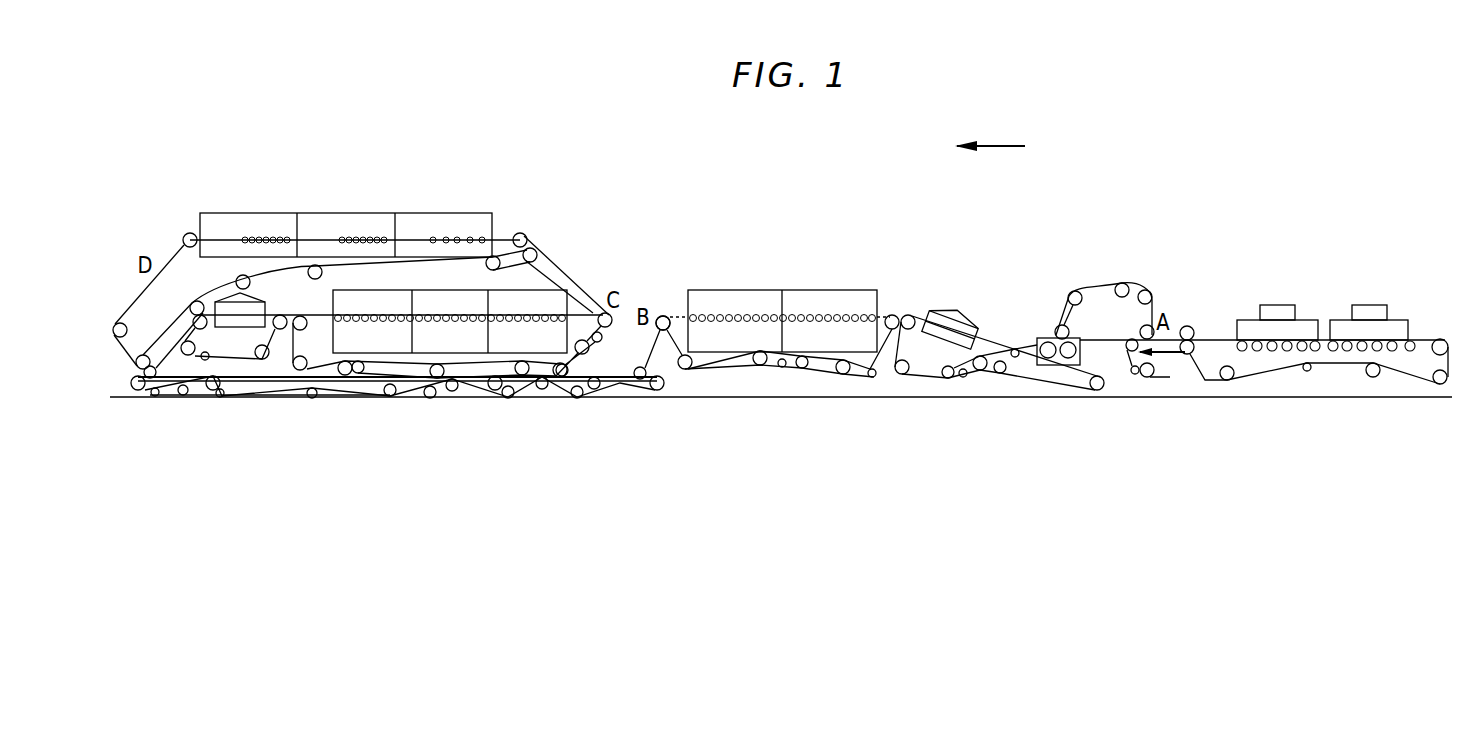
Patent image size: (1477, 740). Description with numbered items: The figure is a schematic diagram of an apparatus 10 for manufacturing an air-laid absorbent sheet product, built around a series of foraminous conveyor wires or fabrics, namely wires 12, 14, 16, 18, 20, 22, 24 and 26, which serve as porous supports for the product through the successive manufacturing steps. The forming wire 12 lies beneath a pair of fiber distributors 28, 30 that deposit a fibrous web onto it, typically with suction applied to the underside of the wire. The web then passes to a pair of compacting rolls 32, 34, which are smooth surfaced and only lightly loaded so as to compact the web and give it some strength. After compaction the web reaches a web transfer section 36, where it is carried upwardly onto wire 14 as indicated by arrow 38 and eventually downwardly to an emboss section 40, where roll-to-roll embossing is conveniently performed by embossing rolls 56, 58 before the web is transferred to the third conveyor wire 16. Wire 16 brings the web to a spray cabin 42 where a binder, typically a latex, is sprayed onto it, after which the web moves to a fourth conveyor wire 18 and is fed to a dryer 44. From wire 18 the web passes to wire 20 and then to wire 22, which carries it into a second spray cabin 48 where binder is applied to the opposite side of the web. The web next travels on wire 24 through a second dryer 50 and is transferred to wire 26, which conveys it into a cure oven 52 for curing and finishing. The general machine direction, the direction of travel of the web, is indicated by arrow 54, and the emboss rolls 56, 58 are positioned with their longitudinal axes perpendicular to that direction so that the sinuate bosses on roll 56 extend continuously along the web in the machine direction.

The apparatus 10 is at (774, 205).
The forming wire 12 is at (1418, 336).
The conveyor wire 14 is at (1147, 311).
The third conveyor wire 16 is at (990, 340).
The fourth conveyor wire 18 is at (678, 314).
The conveyor wire 20 is at (610, 377).
The conveyor wire 22 is at (278, 316).
The conveyor wire 24 is at (278, 343).
The conveyor wire 26 is at (555, 278).
The fiber distributor 28 is at (1262, 311).
The fiber distributor 30 is at (1366, 305).
The compacting roll 32 is at (1188, 325).
The compacting roll 34 is at (1188, 358).
The web transfer section 36 is at (1093, 289).
The arrow 38 is at (1164, 364).
The emboss section 40 is at (1053, 352).
The spray cabin 42 is at (946, 307).
The dryer 44 is at (822, 290).
The spray cabin 48 is at (228, 312).
The dryer 50 is at (360, 345).
The cure oven 52 is at (385, 213).
The arrow 54 is at (995, 145).
The emboss roll 56 is at (1048, 358).
The emboss roll 58 is at (1068, 358).